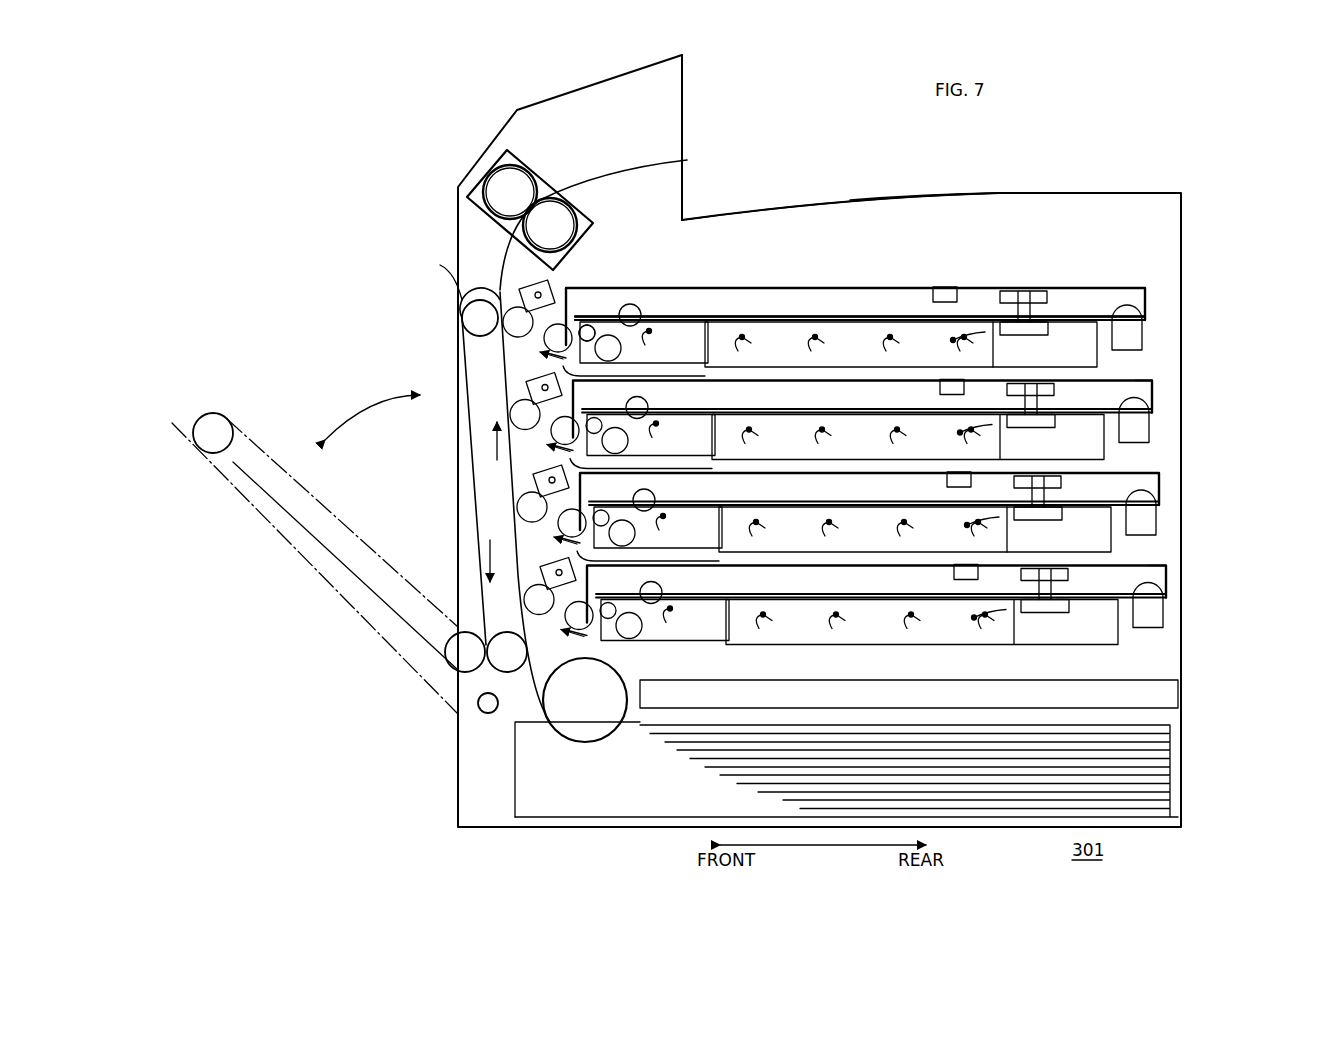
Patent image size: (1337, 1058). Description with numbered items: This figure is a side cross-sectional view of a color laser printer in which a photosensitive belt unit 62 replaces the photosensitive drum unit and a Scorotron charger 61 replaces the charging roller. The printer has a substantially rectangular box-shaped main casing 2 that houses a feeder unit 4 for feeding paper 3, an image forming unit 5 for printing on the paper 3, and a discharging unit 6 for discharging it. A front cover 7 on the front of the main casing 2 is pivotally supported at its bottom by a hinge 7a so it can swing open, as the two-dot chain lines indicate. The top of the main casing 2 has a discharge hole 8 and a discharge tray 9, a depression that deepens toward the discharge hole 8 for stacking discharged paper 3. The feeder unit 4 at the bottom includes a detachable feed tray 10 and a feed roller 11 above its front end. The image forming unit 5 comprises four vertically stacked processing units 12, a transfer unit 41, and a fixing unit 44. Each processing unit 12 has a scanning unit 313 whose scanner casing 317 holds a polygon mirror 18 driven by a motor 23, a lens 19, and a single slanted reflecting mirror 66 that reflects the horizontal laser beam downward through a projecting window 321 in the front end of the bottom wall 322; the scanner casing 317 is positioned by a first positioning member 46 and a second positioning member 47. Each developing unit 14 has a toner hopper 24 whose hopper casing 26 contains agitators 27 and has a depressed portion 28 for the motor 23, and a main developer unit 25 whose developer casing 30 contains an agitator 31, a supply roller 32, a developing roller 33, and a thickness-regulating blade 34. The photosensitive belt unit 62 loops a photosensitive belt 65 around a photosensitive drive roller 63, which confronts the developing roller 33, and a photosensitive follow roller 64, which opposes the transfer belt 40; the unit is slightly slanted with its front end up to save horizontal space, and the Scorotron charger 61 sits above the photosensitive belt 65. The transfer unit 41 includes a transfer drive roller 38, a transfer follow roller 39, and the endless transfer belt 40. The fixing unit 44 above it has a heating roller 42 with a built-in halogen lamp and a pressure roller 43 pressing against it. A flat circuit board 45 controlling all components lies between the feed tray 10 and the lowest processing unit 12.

The main casing 2 is at (1181, 262).
The paper 3 is at (622, 170).
The feeder unit 4 is at (1190, 782).
The image forming unit 5 is at (968, 273).
The discharging unit 6 is at (712, 183).
The front cover 7 is at (462, 405).
The hinge 7a is at (480, 712).
The discharge hole 8 is at (685, 160).
The discharge tray 9 is at (802, 198).
The feed tray 10 is at (510, 760).
The feed roller 11 is at (572, 742).
The processing unit 12 is at (1150, 316).
The developing unit 14 is at (1087, 313).
The polygon mirror 18 is at (1012, 291).
The lens 19 is at (945, 287).
The motor 23 is at (965, 475).
The toner hopper 24 is at (785, 318).
The main developer unit 25 is at (700, 318).
The hopper casing 26 is at (788, 313).
The agitator 27 is at (876, 486).
The depressed portion 28 is at (1055, 335).
The developer casing 30 is at (688, 313).
The agitator 31 is at (643, 346).
The supply roller 32 is at (621, 352).
The developing roller 33 is at (587, 325).
The thickness-regulating blade 34 is at (587, 333).
The transfer drive roller 38 is at (505, 672).
The transfer follow roller 39 is at (440, 273).
The transfer belt 40 is at (478, 500).
The transfer unit 41 is at (468, 521).
The heating roller 42 is at (578, 212).
The pressure roller 43 is at (540, 172).
The fixing unit 44 is at (490, 163).
The circuit board 45 is at (1078, 680).
The first positioning member 46 is at (635, 303).
The second positioning member 47 is at (1143, 335).
The Scorotron charger 61 is at (550, 283).
The photosensitive belt unit 62 is at (500, 340).
The photosensitive drive roller 63 is at (576, 504).
The photosensitive follow roller 64 is at (480, 300).
The photosensitive belt 65 is at (522, 306).
The reflecting mirror 66 is at (582, 288).
The scanning unit 313 is at (1128, 290).
The scanner casing 317 is at (1147, 306).
The projecting window 321 is at (571, 477).
The bottom wall 322 is at (862, 288).